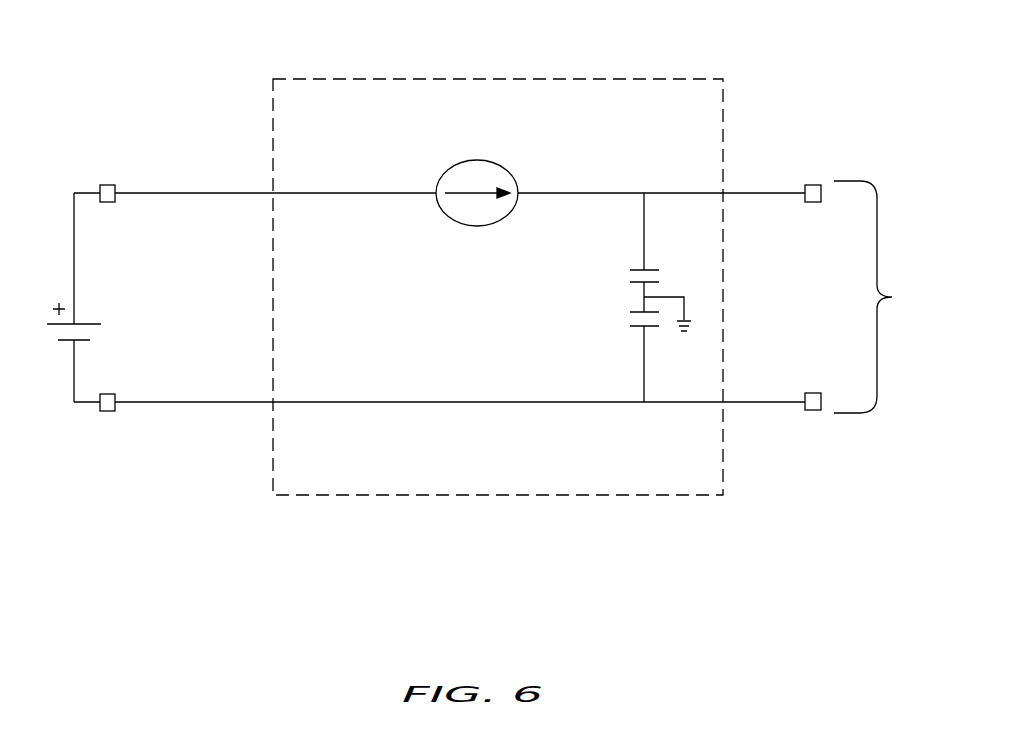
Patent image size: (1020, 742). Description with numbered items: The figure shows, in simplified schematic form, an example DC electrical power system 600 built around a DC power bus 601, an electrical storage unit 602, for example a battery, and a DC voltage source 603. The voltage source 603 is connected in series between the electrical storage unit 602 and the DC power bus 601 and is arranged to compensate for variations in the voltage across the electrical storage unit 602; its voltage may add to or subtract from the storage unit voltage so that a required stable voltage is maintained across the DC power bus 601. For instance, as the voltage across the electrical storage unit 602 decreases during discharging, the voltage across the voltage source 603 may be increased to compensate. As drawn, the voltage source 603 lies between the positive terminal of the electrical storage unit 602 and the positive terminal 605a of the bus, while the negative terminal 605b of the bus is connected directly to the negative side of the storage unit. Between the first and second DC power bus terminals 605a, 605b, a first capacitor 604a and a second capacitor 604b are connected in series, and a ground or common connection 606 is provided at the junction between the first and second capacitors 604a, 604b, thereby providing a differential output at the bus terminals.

The DC electrical power system 600 is at (168, 98).
The DC power bus 601 is at (892, 297).
The electrical storage unit 602 is at (87, 322).
The DC voltage source 603 is at (478, 160).
The first capacitor 604a is at (630, 270).
The second capacitor 604b is at (630, 312).
The positive terminal 605a is at (812, 183).
The negative terminal 605b is at (812, 392).
The ground or common connection 606 is at (687, 321).